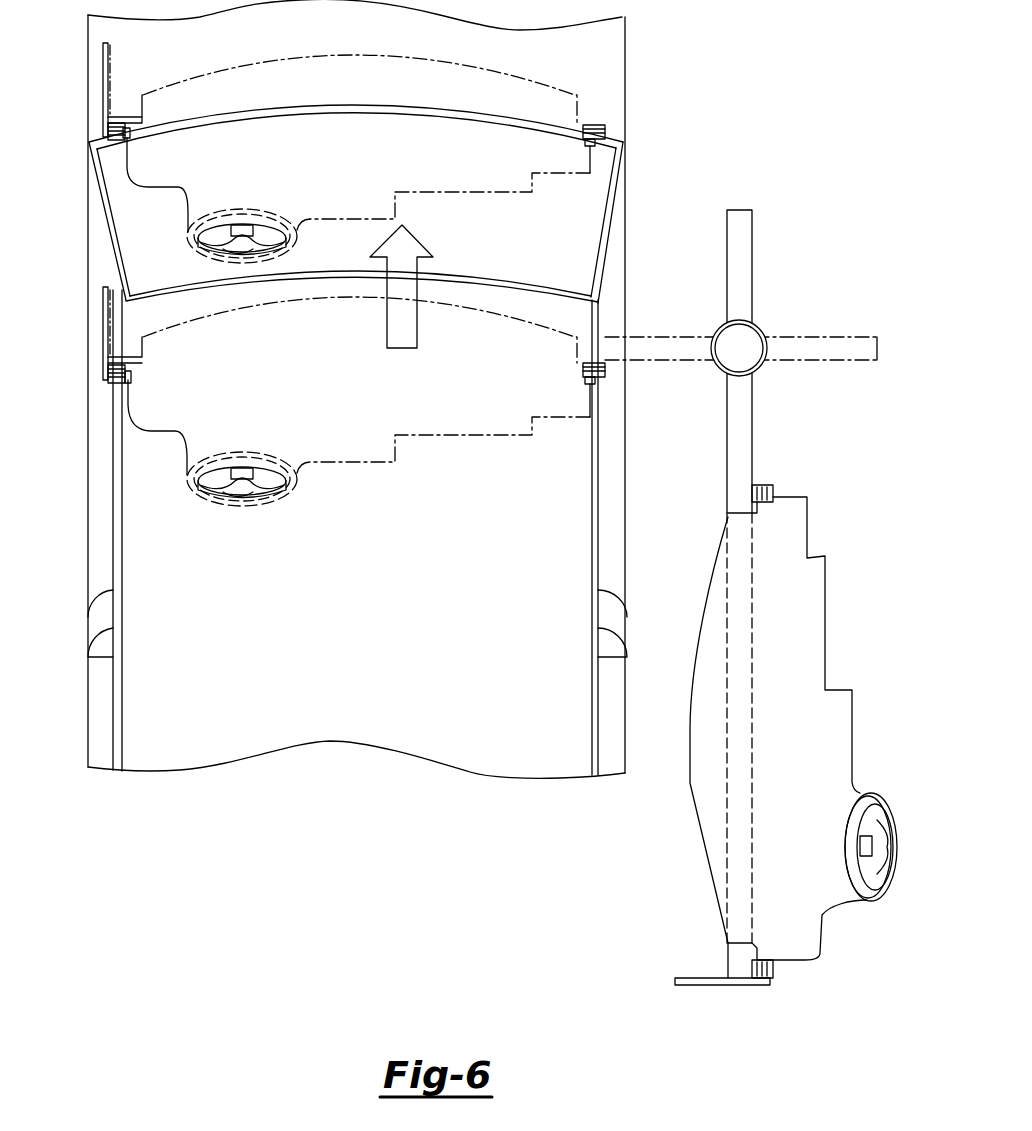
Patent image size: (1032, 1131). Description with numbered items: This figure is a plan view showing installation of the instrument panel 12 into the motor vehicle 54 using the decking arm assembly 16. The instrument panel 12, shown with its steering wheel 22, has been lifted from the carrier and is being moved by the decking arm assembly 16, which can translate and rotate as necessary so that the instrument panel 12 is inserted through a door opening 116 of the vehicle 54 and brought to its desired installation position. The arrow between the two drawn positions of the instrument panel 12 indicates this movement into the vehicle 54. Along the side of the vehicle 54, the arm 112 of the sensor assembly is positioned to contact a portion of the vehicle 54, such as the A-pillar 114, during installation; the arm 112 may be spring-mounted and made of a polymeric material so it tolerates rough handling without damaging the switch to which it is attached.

The instrument panel 12 is at (285, 137).
The decking arm assembly 16 is at (745, 340).
The steering wheel 22 is at (268, 482).
The motor vehicle 54 is at (88, 530).
The arm 112 is at (110, 354).
The A-pillar 114 is at (102, 250).
The door opening 116 is at (621, 309).